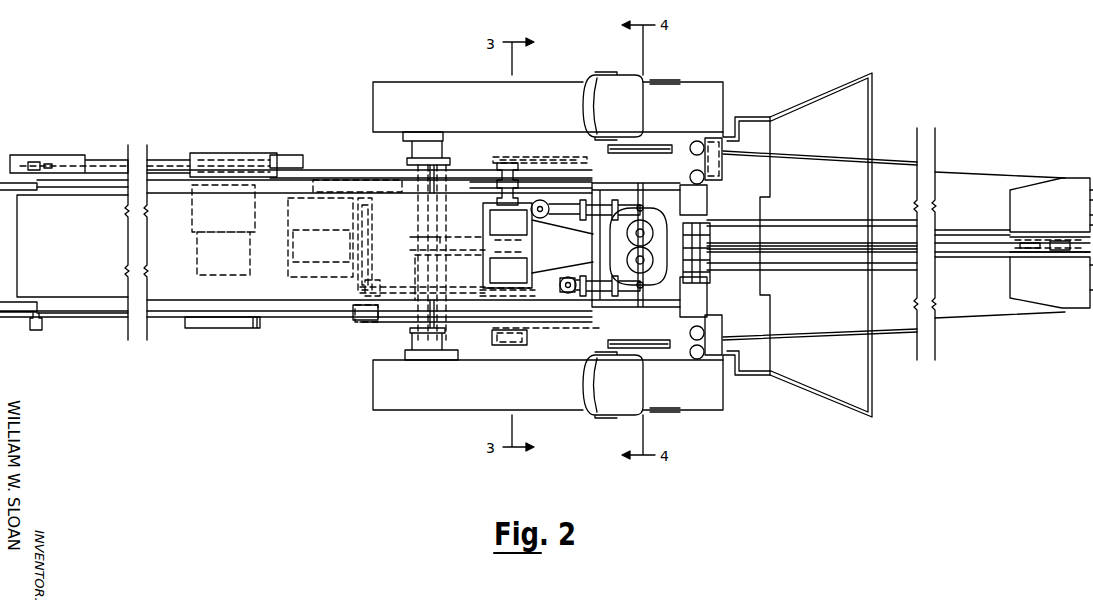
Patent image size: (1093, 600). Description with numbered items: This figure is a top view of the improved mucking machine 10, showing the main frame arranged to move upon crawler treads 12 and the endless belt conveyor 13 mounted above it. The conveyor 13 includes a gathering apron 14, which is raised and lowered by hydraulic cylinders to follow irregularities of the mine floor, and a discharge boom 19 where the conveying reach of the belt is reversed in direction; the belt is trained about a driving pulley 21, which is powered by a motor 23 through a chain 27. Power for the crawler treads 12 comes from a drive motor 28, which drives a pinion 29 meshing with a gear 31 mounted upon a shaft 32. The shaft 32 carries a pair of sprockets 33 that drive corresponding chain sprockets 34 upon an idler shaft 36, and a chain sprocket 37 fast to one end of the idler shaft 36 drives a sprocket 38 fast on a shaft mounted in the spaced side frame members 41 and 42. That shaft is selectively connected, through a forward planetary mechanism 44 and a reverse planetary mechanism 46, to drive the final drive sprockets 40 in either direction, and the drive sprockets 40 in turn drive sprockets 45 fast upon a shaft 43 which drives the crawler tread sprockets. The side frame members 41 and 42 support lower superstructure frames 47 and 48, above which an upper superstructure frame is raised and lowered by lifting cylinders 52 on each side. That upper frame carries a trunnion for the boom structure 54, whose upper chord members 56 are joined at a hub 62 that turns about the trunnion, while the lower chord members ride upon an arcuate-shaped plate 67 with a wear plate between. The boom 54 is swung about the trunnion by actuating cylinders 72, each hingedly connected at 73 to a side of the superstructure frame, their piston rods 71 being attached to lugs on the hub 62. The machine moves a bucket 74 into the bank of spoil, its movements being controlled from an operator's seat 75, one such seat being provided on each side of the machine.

The mucking machine 10 is at (762, 70).
The crawler treads 12 is at (418, 82).
The endless belt conveyor 13 is at (250, 305).
The gathering apron 14 is at (826, 92).
The discharge boom 19 is at (80, 310).
The driving pulley 21 is at (45, 172).
The motor 23 is at (212, 280).
The chain 27 is at (170, 168).
The drive motor 28 is at (306, 300).
The pinion 29 is at (320, 178).
The gear 31 is at (365, 180).
The shaft 32 is at (416, 238).
The sprockets 33 is at (358, 291).
The chain sprockets 34 is at (482, 280).
The idler shaft 36 is at (455, 182).
The chain sprocket 37 is at (460, 325).
The sprocket 38 is at (538, 347).
The final drive sprockets 40 is at (485, 233).
The side frame member 41 is at (533, 258).
The side frame member 42 is at (452, 176).
The shaft 43 is at (414, 210).
The forward planetary mechanism 44 is at (499, 205).
The sprockets 45 is at (422, 252).
The reverse planetary mechanism 46 is at (484, 332).
The lower superstructure frame 47 is at (594, 333).
The lower superstructure frame 48 is at (587, 165).
The lifting cylinders 52 is at (706, 180).
The boom structure 54 is at (845, 278).
The upper chord members 56 is at (806, 222).
The hub 62 is at (714, 196).
The arcuate-shaped plate 67 is at (712, 220).
The piston rods 71 is at (641, 184).
The actuating cylinders 72 is at (612, 187).
The hinge connection 73 is at (578, 330).
The bucket 74 is at (1054, 215).
The operator's seat 75 is at (635, 85).